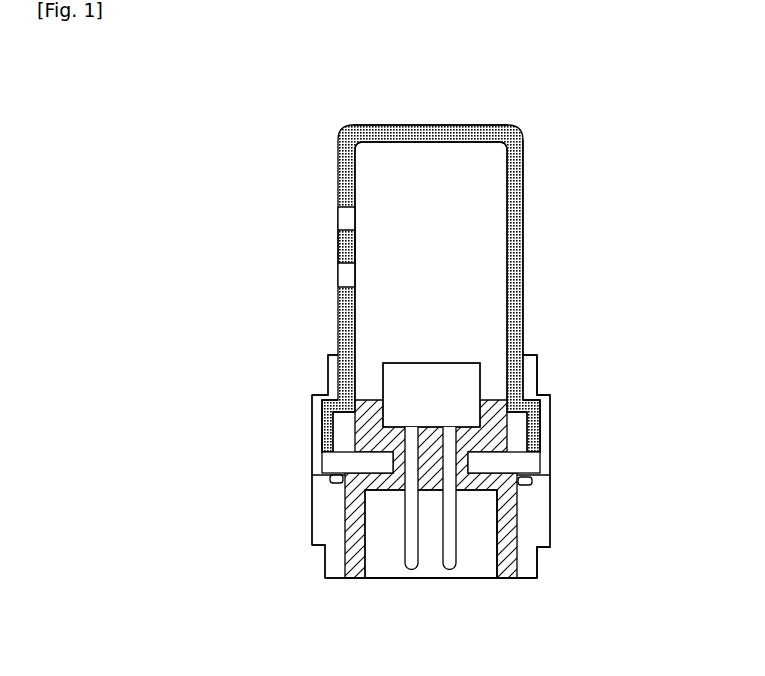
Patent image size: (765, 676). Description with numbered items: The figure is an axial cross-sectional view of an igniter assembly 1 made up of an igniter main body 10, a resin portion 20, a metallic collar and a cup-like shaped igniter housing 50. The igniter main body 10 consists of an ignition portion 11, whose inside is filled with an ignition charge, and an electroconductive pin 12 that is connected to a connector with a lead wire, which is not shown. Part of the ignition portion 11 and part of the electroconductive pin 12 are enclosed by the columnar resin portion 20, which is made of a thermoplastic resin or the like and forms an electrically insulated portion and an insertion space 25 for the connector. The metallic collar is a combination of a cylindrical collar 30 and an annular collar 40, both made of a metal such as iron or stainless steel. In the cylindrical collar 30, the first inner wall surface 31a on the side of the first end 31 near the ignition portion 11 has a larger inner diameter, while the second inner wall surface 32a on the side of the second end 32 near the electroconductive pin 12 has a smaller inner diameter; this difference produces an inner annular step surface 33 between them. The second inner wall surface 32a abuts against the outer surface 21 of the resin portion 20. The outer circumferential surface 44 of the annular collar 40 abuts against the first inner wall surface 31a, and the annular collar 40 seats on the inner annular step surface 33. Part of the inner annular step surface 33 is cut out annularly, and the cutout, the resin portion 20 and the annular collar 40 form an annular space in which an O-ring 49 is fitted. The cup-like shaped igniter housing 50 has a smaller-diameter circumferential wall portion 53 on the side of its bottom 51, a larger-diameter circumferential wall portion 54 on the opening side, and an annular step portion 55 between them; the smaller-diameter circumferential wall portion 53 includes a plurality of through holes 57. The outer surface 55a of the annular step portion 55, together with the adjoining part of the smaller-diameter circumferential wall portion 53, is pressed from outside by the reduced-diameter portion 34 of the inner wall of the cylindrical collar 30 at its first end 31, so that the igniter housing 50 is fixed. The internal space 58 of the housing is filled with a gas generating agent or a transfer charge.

The igniter assembly 1 is at (515, 113).
The igniter main body 10 is at (452, 355).
The ignition portion 11 is at (444, 403).
The electroconductive pin 12 is at (450, 560).
The resin portion 20 is at (504, 508).
The outer surface 21 is at (530, 547).
The insertion space 25 is at (388, 543).
The cylindrical collar 30 is at (306, 505).
The first end 31 is at (335, 354).
The first inner wall surface 31a is at (323, 433).
The second end 32 is at (330, 579).
The second inner wall surface 32a is at (352, 527).
The inner annular step surface 33 is at (320, 458).
The reduced-diameter portion 34 is at (537, 372).
The annular collar 40 is at (375, 482).
The outer circumferential surface 44 is at (540, 464).
The O-ring 49 is at (533, 480).
The cup-like shaped igniter housing 50 is at (400, 118).
The bottom 51 is at (463, 124).
The smaller-diameter circumferential wall portion 53 is at (524, 180).
The larger-diameter circumferential wall portion 54 is at (539, 412).
The annular step portion 55 is at (350, 412).
The outer surface 55a is at (323, 399).
The through holes 57 is at (338, 216).
The internal space 58 is at (402, 214).